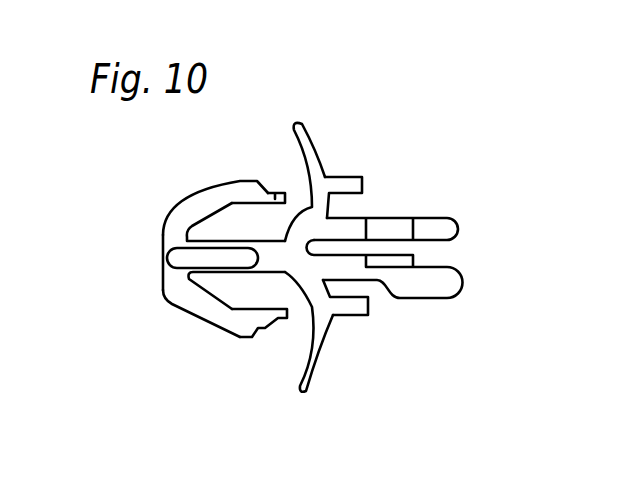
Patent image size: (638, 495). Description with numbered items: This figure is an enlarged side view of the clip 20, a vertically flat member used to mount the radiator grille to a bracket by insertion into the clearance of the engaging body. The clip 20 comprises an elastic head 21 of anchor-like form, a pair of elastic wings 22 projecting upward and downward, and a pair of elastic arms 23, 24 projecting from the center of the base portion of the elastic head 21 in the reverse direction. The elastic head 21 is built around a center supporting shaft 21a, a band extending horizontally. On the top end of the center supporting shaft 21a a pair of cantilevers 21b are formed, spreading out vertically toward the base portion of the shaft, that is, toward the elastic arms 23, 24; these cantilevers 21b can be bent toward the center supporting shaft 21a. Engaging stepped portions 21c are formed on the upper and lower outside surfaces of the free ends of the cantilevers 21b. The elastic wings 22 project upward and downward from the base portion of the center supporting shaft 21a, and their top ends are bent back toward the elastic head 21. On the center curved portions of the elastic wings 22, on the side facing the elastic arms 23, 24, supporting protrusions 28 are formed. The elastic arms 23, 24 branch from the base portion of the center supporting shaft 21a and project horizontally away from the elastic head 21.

The clip 20 is at (287, 254).
The elastic head 21 is at (173, 279).
The center supporting shaft 21a is at (265, 262).
The cantilever 21b is at (219, 200).
The engaging stepped portion 21c is at (275, 196).
The elastic wing 22 is at (309, 146).
The upper elastic arm 23 is at (427, 225).
The lower elastic arm 24 is at (424, 290).
The supporting protrusion 28 is at (348, 187).